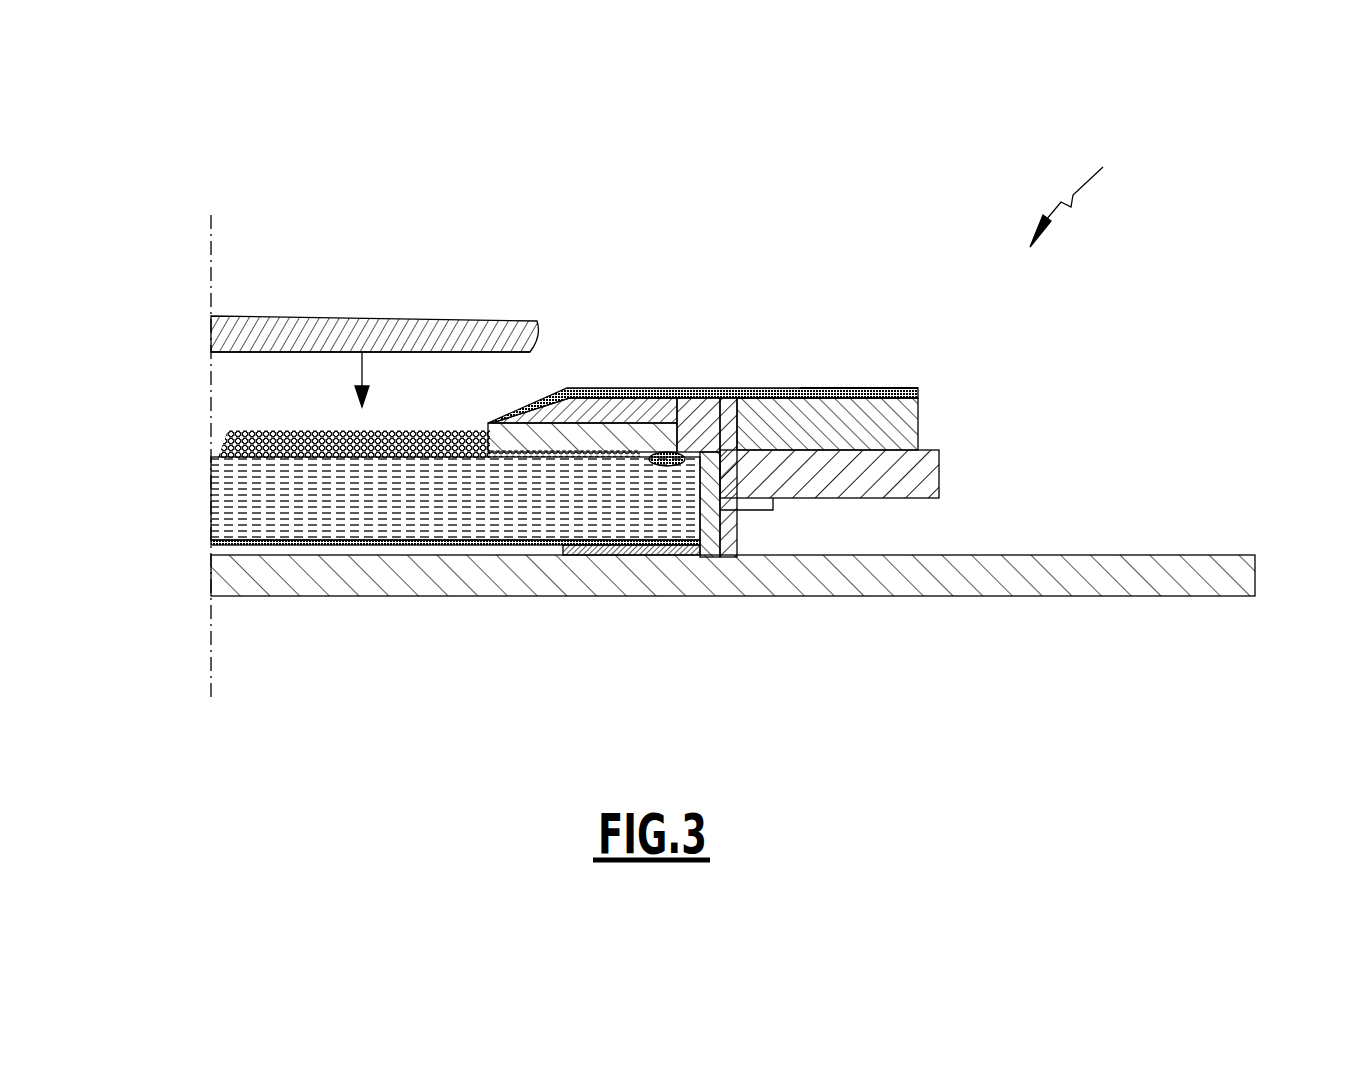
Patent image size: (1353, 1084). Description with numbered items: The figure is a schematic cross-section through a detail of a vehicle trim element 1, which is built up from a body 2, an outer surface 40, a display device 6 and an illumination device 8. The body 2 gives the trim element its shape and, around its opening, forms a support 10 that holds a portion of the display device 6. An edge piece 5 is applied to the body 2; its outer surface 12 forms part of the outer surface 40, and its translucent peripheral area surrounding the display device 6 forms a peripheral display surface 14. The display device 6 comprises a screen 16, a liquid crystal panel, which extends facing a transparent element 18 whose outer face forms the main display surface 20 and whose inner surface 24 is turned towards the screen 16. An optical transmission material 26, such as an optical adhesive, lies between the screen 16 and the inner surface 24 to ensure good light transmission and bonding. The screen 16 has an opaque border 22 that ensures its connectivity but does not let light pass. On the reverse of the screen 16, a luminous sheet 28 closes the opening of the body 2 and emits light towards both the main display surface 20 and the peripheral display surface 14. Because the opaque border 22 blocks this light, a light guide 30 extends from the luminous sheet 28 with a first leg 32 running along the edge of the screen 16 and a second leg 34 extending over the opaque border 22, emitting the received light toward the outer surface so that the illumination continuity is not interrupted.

The vehicle trim element 1 is at (1077, 190).
The body 2 is at (880, 427).
The edge piece 5 is at (775, 388).
The display device 6 is at (477, 500).
The illumination device 8 is at (1077, 597).
The support 10 is at (925, 477).
The outer surface of the edge piece 12 is at (644, 388).
The peripheral display surface 14 is at (609, 388).
The screen 16 is at (365, 520).
The transparent element 18 is at (318, 333).
The main display surface 20 is at (387, 317).
The opaque border 22 is at (678, 508).
The inner surface 24 is at (293, 352).
The optical transmission material 26 is at (248, 432).
The luminous sheet 28 is at (498, 577).
The light guide 30 is at (722, 388).
The first leg 32 is at (725, 512).
The second leg 34 is at (673, 452).
The outer surface 40 is at (857, 388).